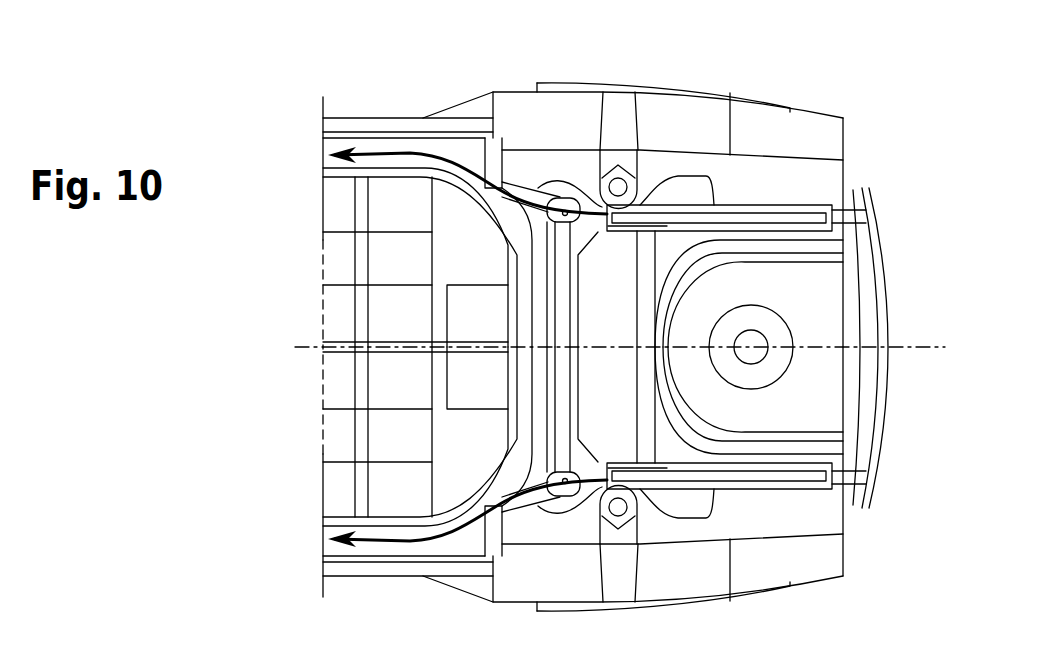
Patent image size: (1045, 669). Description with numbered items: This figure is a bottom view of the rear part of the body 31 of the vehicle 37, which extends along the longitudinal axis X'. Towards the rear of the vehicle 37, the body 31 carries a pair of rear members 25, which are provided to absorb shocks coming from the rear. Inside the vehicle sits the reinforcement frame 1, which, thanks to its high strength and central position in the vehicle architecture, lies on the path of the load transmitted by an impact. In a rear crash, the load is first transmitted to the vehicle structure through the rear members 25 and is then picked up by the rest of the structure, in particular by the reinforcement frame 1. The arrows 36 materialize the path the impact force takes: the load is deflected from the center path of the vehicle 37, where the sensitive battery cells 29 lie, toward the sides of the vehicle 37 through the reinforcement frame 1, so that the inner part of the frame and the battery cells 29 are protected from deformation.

The reinforcement frame 1 is at (374, 146).
The rear members 25 is at (805, 213).
The battery cells 29 is at (397, 427).
The body 31 is at (757, 73).
The arrows 36 is at (428, 157).
The vehicle 37 is at (918, 182).
The longitudinal axis X' is at (621, 314).